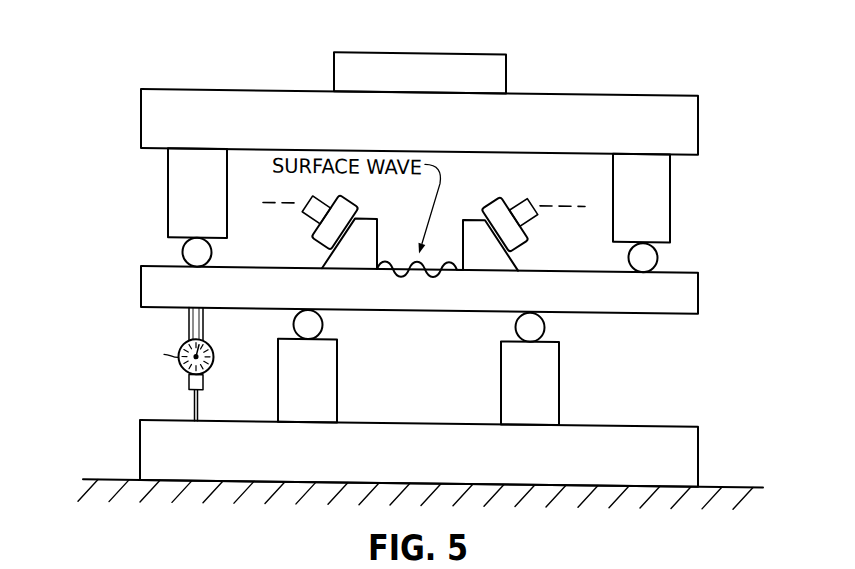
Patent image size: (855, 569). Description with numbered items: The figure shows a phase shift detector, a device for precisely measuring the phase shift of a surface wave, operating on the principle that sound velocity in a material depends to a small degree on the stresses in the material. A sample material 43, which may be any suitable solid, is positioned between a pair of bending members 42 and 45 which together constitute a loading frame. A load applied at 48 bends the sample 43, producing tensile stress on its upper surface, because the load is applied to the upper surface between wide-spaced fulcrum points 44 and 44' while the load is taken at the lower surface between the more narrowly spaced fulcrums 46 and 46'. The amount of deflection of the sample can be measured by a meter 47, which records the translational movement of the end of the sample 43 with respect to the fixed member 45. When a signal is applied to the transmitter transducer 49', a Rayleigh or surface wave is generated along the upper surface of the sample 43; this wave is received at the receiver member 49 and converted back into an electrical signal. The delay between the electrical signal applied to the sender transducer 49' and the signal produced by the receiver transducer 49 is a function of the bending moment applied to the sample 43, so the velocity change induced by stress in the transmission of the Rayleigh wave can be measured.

The bending member 42 is at (588, 89).
The sample material 43 is at (698, 283).
The fulcrum point 44 is at (658, 213).
The fulcrum point 44' is at (177, 207).
The bending member 45 is at (698, 450).
The fulcrum 46 is at (548, 368).
The fulcrum 46' is at (328, 366).
The meter 47 is at (209, 344).
The load 48 is at (472, 50).
The receiver transducer 49 is at (524, 222).
The transmitter transducer 49' is at (328, 220).